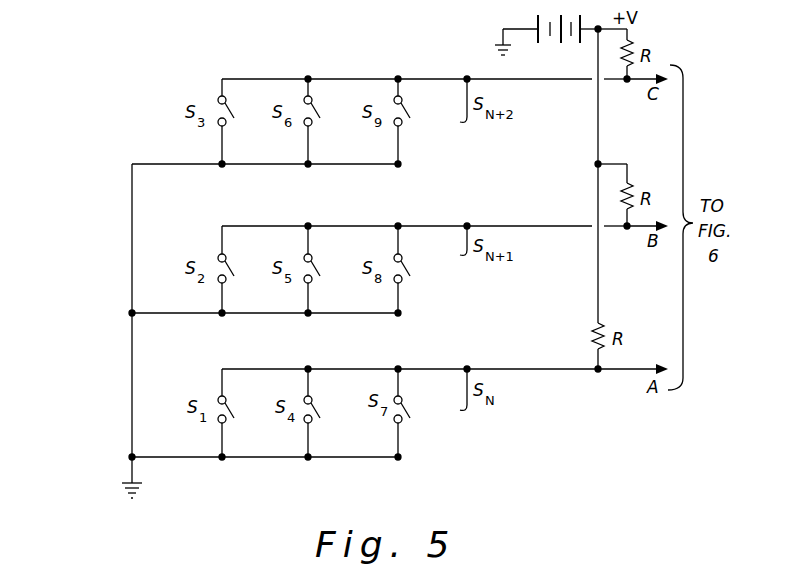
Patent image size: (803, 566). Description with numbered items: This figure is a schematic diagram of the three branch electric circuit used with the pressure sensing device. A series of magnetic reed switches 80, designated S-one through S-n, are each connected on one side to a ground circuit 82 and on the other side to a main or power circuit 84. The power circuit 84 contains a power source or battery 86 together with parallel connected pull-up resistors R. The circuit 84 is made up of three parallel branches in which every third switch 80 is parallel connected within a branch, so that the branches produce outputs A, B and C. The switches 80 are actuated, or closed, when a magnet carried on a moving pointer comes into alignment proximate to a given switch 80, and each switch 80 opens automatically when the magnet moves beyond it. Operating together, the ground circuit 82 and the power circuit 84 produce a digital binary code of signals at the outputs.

The magnetic reed switches 80 is at (212, 92).
The ground circuit 82 is at (126, 202).
The main or power circuit 84 is at (430, 220).
The power source or battery 86 is at (570, 40).